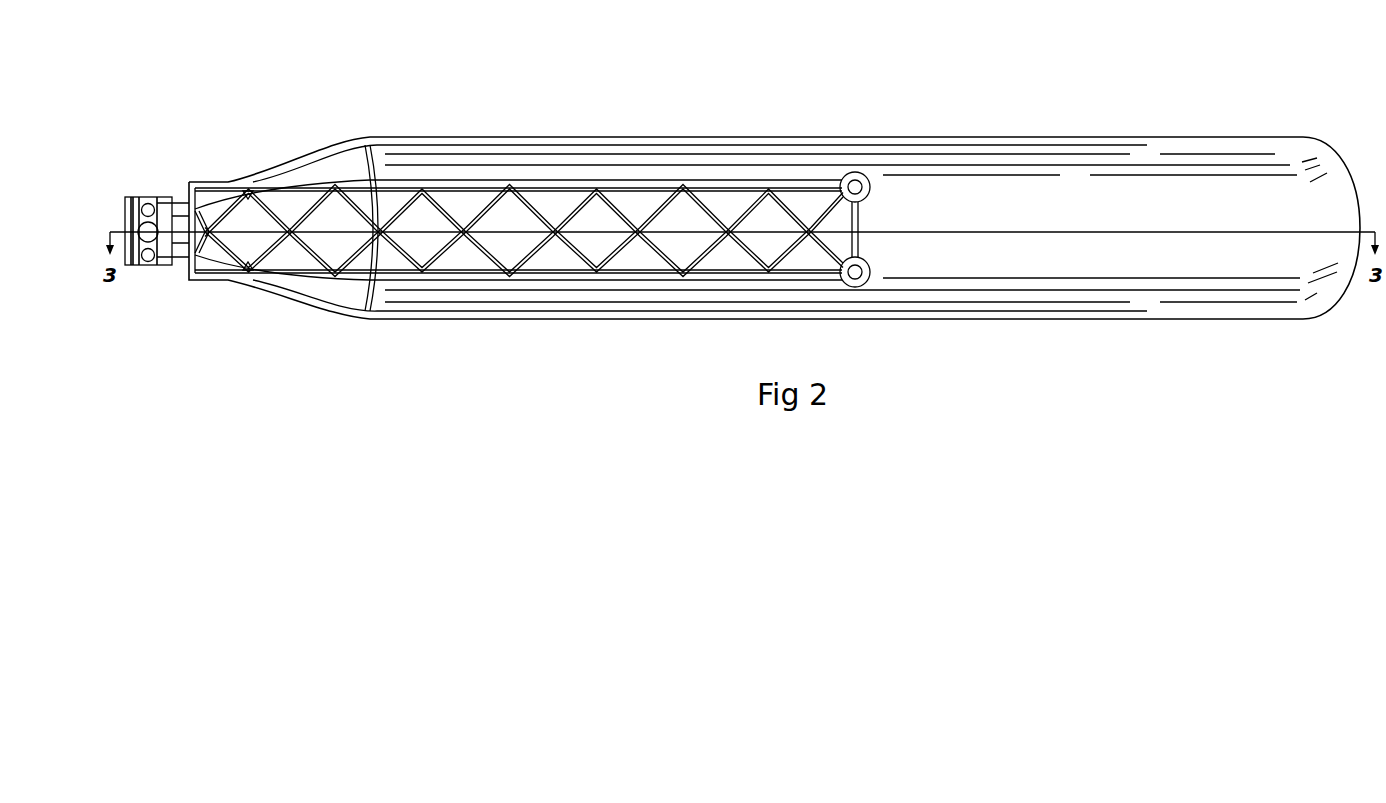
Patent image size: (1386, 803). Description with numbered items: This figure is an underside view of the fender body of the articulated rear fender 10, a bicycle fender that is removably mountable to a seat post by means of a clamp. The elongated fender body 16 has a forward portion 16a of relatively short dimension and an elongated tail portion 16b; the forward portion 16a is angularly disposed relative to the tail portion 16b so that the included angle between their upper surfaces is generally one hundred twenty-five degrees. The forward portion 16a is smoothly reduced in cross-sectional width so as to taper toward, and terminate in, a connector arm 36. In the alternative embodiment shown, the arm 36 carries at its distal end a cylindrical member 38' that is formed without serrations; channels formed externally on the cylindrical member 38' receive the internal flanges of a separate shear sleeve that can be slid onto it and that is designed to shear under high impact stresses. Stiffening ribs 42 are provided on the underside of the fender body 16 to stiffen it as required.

The articulated rear fender 10 is at (734, 95).
The fender body 16 is at (550, 138).
The forward portion 16a is at (228, 178).
The tail portion 16b is at (878, 145).
The connector arm 36 is at (178, 258).
The cylindrical member 38' is at (148, 296).
The stiffening ribs 42 is at (320, 262).